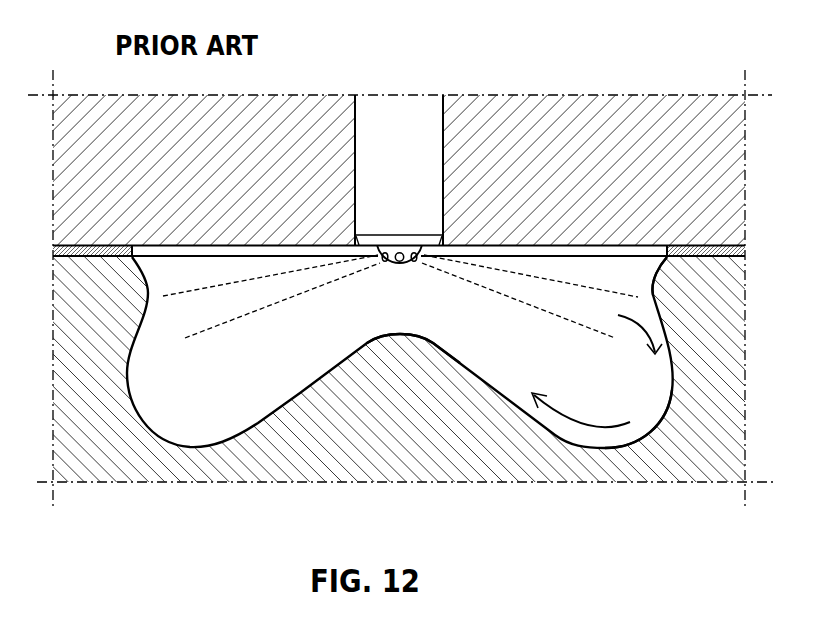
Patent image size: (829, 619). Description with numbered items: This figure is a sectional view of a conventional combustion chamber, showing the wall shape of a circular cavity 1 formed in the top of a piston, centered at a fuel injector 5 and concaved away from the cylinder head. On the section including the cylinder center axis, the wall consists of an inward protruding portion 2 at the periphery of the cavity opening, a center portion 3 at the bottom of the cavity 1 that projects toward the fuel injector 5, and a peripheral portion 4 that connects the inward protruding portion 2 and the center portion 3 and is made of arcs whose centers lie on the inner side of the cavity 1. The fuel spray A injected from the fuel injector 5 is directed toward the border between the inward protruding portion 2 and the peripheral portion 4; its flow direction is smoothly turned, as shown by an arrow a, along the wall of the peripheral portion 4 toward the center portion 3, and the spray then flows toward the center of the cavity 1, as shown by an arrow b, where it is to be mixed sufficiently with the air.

The cavity 1 is at (285, 340).
The inward protruding portion 2 is at (652, 283).
The center portion 3 is at (450, 357).
The peripheral portion 4 is at (663, 413).
The fuel injector 5 is at (400, 112).
The fuel spray A is at (565, 312).
The arrow a is at (640, 346).
The arrow b is at (575, 397).